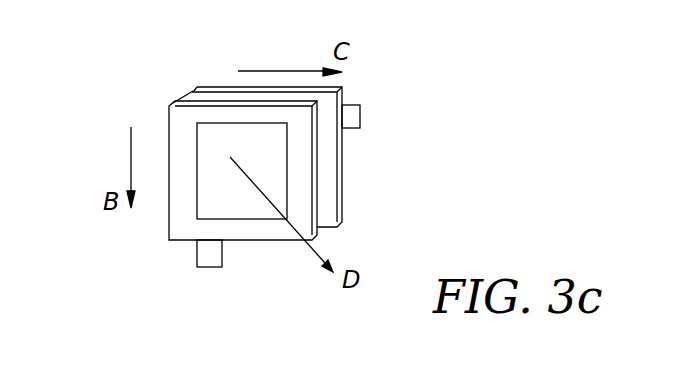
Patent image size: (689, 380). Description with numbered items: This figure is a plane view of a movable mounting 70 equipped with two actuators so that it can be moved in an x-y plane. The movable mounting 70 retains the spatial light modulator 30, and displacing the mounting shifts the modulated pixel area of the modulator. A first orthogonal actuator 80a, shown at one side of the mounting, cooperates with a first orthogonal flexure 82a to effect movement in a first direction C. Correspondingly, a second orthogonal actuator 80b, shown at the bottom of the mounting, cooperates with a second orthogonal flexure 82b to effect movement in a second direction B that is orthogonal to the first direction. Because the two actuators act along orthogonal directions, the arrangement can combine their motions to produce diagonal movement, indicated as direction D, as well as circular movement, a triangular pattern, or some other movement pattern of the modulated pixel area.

The movable mounting 70 is at (295, 176).
The first orthogonal flexure 82a is at (342, 155).
The second orthogonal flexure 82b is at (273, 241).
The spatial light modulator 30 is at (288, 177).
The first orthogonal actuator 80a is at (360, 110).
The second orthogonal actuator 80b is at (201, 267).